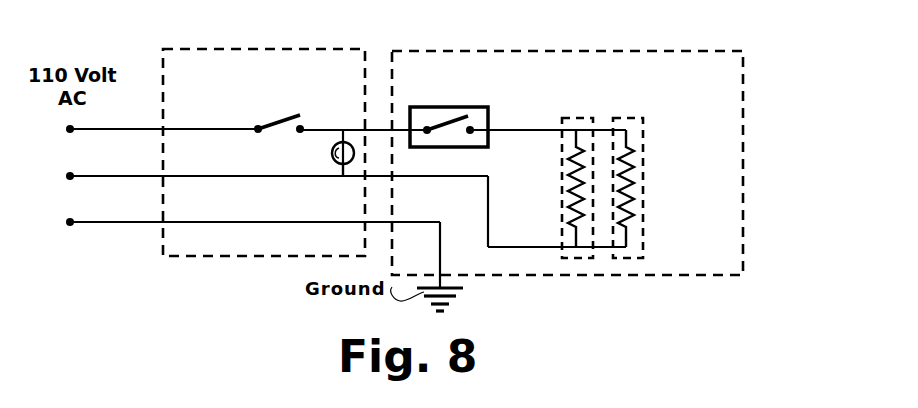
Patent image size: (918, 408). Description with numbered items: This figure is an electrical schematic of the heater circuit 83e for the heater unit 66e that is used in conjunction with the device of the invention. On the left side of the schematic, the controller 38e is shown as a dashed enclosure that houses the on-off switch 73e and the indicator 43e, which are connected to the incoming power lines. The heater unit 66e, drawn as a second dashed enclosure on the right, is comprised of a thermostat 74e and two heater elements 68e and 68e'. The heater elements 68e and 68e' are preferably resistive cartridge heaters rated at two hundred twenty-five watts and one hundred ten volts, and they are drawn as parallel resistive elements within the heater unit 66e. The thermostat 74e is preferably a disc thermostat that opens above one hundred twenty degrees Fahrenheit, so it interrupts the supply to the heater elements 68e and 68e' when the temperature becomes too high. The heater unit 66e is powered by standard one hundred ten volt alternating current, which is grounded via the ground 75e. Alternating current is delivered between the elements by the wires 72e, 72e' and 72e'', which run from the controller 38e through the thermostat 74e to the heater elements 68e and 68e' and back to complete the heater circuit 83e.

The controller 38e is at (233, 47).
The on-off switch 73e is at (280, 112).
The wire 72e'' is at (328, 118).
The indicator 43e is at (333, 162).
The ground 75e is at (150, 222).
The thermostat 74e is at (432, 108).
The heater unit 66e is at (573, 277).
The wire 72e' is at (565, 106).
The wire 72e is at (426, 211).
The heater circuit 83e is at (533, 245).
The heater element 68e is at (545, 188).
The heater element 68e' is at (672, 188).